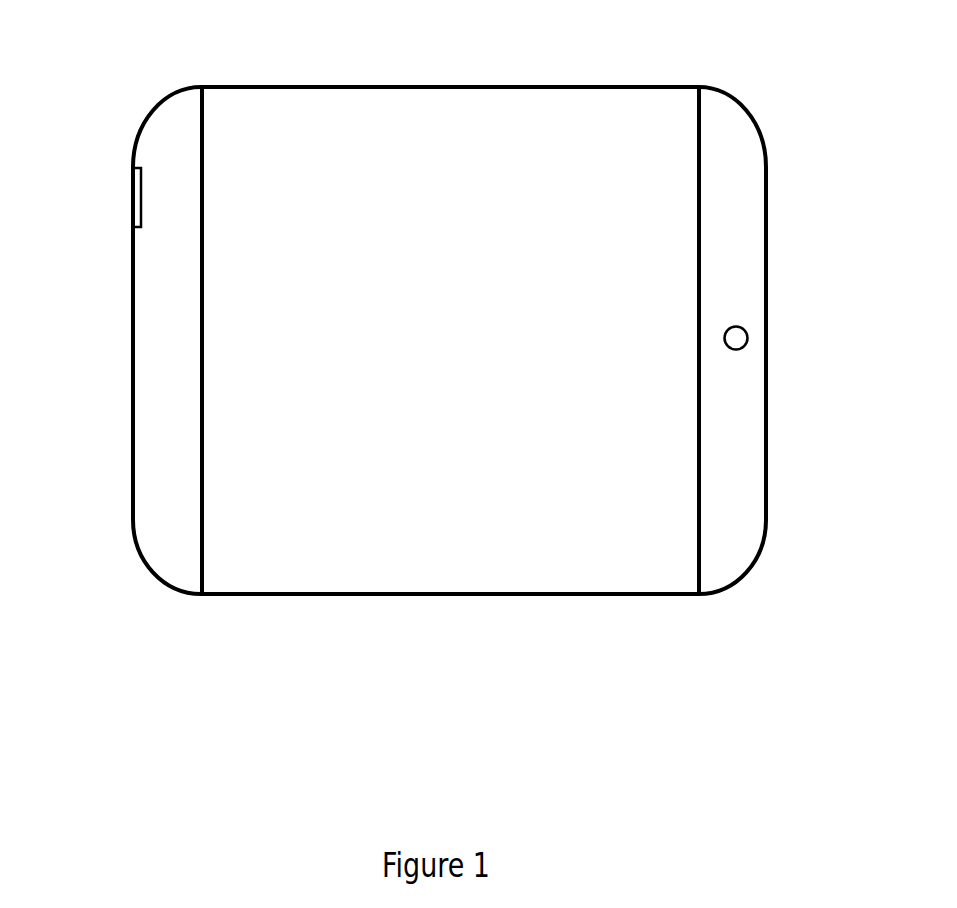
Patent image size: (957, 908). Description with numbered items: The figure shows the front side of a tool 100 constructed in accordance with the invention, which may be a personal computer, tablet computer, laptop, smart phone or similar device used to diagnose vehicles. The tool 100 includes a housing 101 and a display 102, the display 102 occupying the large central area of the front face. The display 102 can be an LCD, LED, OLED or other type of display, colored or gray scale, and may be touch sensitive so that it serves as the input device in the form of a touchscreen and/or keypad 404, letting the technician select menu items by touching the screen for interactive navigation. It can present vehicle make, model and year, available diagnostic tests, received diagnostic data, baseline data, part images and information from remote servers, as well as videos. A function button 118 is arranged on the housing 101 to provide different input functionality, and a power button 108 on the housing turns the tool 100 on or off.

The tool 100 is at (334, 69).
The housing 101 is at (714, 538).
The display 102 is at (595, 596).
The touchscreen and/or keypad 404 is at (513, 565).
The power button 108 is at (130, 197).
The function button 118 is at (745, 348).